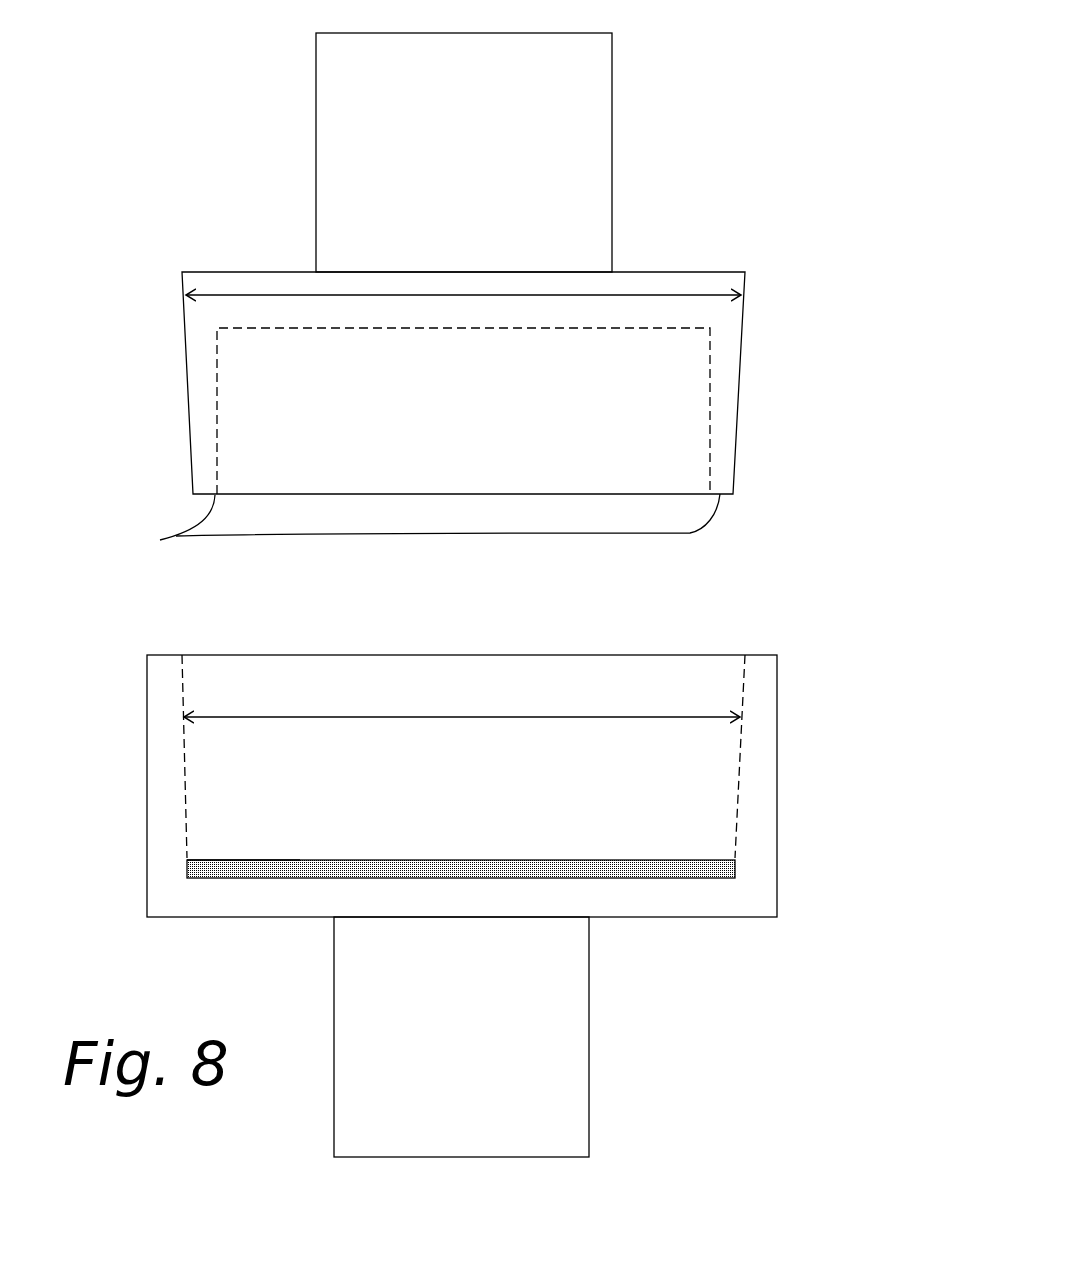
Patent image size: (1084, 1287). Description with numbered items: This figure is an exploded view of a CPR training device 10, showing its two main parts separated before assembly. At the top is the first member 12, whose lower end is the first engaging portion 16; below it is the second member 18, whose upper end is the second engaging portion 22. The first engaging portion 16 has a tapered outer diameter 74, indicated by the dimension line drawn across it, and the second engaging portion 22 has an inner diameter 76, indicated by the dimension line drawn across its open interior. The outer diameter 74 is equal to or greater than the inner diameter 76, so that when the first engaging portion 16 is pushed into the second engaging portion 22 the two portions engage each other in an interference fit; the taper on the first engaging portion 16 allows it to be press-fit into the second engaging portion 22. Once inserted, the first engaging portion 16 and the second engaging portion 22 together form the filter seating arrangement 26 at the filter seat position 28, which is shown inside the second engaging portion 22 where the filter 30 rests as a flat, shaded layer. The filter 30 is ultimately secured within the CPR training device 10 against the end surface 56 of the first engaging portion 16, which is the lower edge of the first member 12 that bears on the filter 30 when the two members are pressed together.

The CPR training device 10 is at (853, 133).
The first member 12 is at (695, 197).
The first engaging portion 16 is at (728, 383).
The outer diameter 74 is at (745, 295).
The end surface 56 is at (404, 529).
The second member 18 is at (853, 765).
The second engaging portion 22 is at (765, 813).
The filter seating arrangement 26 is at (181, 859).
The filter seat position 28 is at (193, 867).
The filter 30 is at (722, 870).
The inner diameter 76 is at (742, 717).